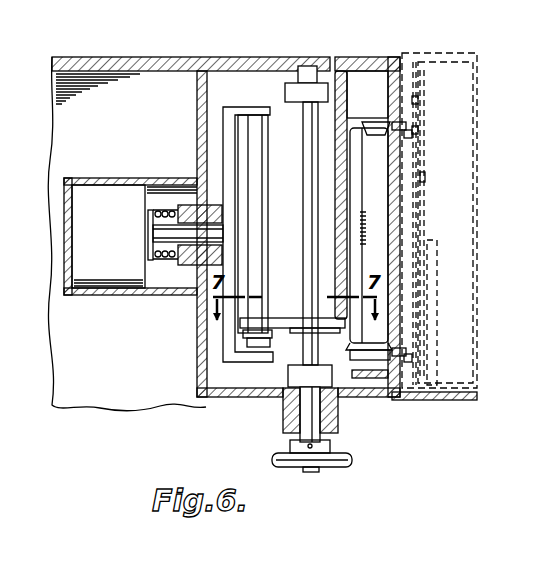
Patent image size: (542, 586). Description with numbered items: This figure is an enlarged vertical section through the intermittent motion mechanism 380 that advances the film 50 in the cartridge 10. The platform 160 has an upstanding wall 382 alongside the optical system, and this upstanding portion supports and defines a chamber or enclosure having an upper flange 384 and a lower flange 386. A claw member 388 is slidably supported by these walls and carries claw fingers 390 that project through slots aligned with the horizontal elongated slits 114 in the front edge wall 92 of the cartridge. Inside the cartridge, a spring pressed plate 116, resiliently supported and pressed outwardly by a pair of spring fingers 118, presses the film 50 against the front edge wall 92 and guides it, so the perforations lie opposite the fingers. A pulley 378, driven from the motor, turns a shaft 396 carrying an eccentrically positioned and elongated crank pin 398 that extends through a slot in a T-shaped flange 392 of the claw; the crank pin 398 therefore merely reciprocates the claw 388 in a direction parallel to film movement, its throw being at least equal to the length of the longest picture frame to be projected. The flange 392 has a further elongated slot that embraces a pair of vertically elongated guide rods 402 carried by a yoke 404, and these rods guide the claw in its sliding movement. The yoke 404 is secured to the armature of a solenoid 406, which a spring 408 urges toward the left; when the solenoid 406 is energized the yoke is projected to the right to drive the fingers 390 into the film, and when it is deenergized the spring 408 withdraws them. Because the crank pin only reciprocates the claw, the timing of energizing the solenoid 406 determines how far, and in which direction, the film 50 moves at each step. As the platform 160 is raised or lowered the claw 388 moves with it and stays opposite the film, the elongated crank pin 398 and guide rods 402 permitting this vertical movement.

The cartridge 10 is at (470, 54).
The film 50 is at (420, 166).
The front edge wall 92 is at (406, 61).
The horizontal elongated slits 114 is at (414, 136).
The spring pressed plate 116 is at (424, 184).
The spring fingers 118 is at (437, 300).
The platform 160 is at (455, 400).
The pulley 378 is at (330, 467).
The intermittent motion mechanism 380 is at (196, 128).
The upstanding wall 382 is at (395, 218).
The upper flange 384 is at (361, 120).
The lower flange 386 is at (377, 379).
The claw member 388 is at (355, 193).
The claw fingers 390 is at (404, 128).
The T-shaped flange 392 is at (288, 316).
The shaft 396 is at (306, 414).
The crank pin 398 is at (308, 180).
The guide rods 402 is at (255, 149).
The yoke 404 is at (232, 118).
The solenoid 406 is at (112, 289).
The spring 408 is at (168, 208).